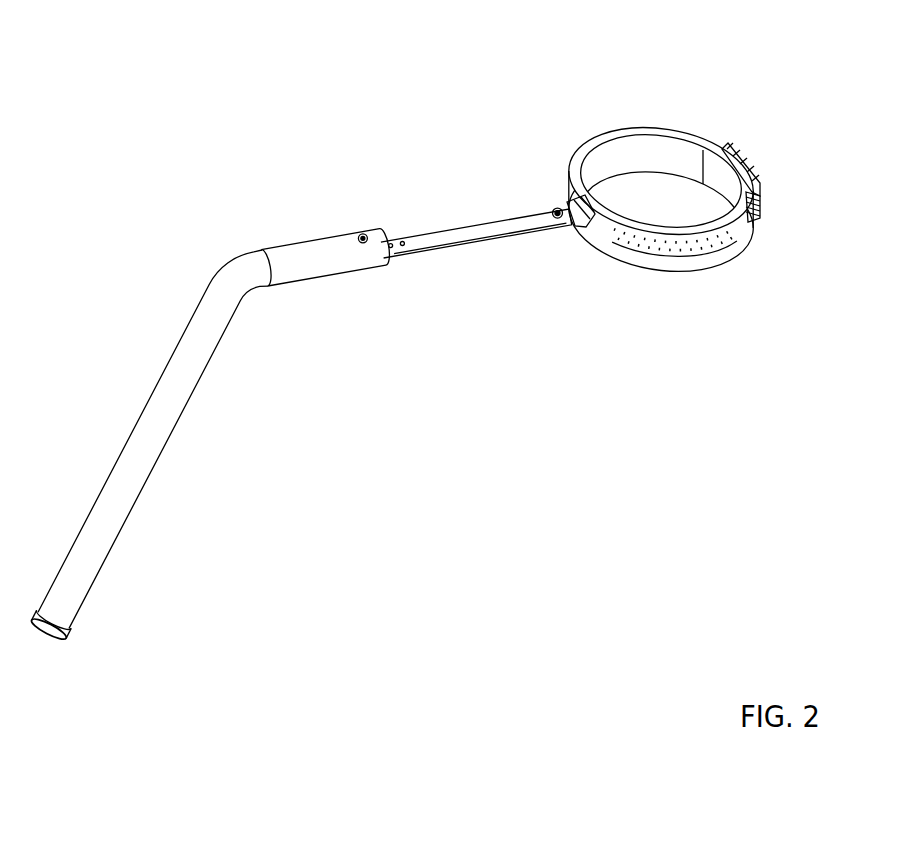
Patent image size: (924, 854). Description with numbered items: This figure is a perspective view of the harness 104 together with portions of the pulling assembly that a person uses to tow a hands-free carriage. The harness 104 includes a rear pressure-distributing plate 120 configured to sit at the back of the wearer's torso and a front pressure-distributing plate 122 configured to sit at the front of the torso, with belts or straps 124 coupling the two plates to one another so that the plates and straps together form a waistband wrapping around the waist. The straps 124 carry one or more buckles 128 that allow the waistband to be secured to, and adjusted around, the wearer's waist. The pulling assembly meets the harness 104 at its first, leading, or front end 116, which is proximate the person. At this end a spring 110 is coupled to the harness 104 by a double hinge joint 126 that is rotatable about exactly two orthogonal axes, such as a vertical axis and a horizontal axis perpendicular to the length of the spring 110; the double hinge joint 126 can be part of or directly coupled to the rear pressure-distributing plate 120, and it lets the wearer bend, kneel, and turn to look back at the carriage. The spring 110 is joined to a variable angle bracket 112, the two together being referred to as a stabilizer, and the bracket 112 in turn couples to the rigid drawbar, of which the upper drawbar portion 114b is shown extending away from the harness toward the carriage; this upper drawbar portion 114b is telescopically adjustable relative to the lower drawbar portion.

The harness 104 is at (710, 252).
The spring 110 is at (457, 220).
The variable angle bracket 112 is at (293, 255).
The upper drawbar portion 114b is at (133, 483).
The front end 116 is at (518, 290).
The rear pressure-distributing plate 120 is at (590, 235).
The front pressure-distributing plate 122 is at (712, 177).
The straps 124 is at (612, 157).
The double hinge joint 126 is at (555, 198).
The buckles 128 is at (752, 173).